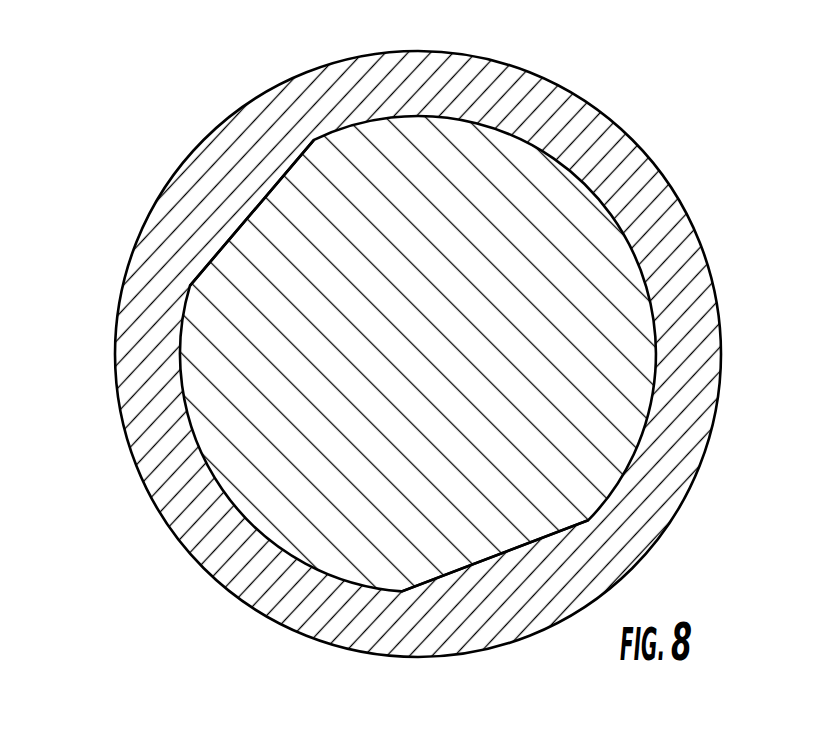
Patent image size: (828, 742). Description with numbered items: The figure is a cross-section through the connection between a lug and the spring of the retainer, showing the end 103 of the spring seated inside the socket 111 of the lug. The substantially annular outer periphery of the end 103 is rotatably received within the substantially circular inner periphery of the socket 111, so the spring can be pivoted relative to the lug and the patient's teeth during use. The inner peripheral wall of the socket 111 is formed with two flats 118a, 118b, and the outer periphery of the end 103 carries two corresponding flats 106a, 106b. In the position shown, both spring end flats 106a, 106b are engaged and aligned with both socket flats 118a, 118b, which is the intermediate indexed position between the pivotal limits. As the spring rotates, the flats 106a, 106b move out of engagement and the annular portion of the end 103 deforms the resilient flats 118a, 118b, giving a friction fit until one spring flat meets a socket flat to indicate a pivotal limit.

The socket 111 is at (653, 187).
The end of the spring 103 is at (617, 325).
The flat 106a is at (470, 612).
The flat 118a is at (462, 570).
The flat 106b is at (179, 204).
The flat 118b is at (240, 223).